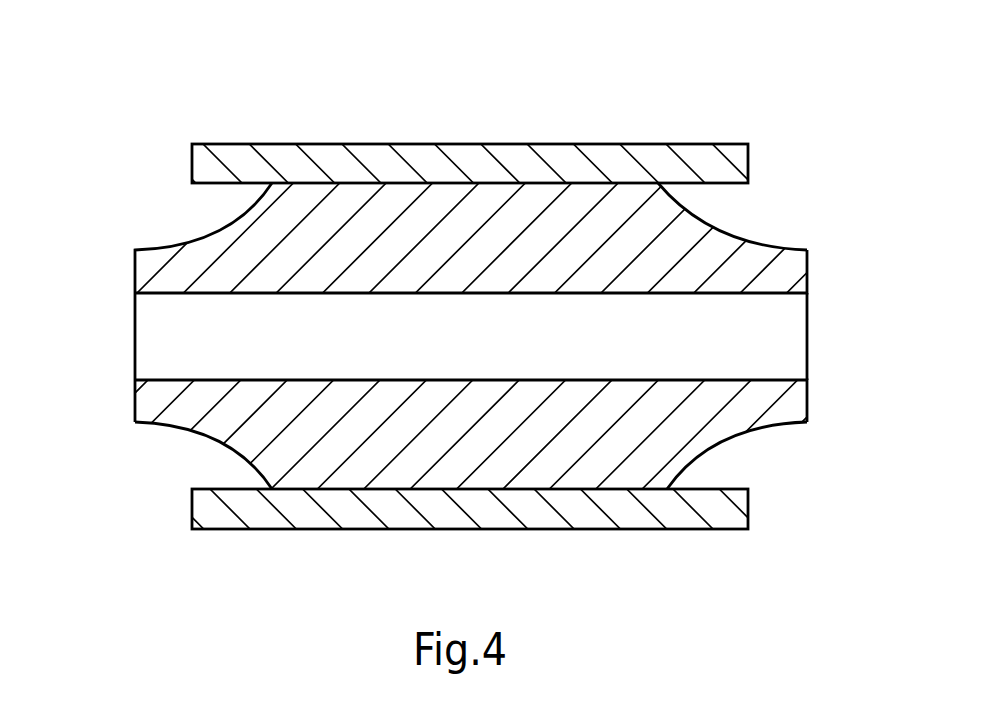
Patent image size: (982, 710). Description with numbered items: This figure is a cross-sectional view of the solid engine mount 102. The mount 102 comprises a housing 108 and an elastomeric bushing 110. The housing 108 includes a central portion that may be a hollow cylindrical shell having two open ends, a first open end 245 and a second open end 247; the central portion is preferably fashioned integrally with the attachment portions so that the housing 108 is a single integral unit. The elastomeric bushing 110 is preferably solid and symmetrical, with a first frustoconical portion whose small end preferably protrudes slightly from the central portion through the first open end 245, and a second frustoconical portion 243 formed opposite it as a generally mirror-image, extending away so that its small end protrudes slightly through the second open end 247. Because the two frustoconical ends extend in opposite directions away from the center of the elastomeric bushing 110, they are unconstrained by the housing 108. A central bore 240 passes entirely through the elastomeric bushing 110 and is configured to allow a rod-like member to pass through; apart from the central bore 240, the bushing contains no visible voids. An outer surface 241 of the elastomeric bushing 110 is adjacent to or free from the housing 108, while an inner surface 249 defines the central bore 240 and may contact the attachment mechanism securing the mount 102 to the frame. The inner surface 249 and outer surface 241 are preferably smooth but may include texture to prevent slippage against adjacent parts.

The mount 102 is at (467, 292).
The housing 108 is at (656, 158).
The elastomeric bushing 110 is at (753, 238).
The central bore 240 is at (170, 347).
The outer surface 241 is at (191, 240).
The second frustoconical portion 243 is at (797, 407).
The first open end 245 is at (193, 465).
The second open end 247 is at (740, 465).
The inner surface 249 is at (390, 293).